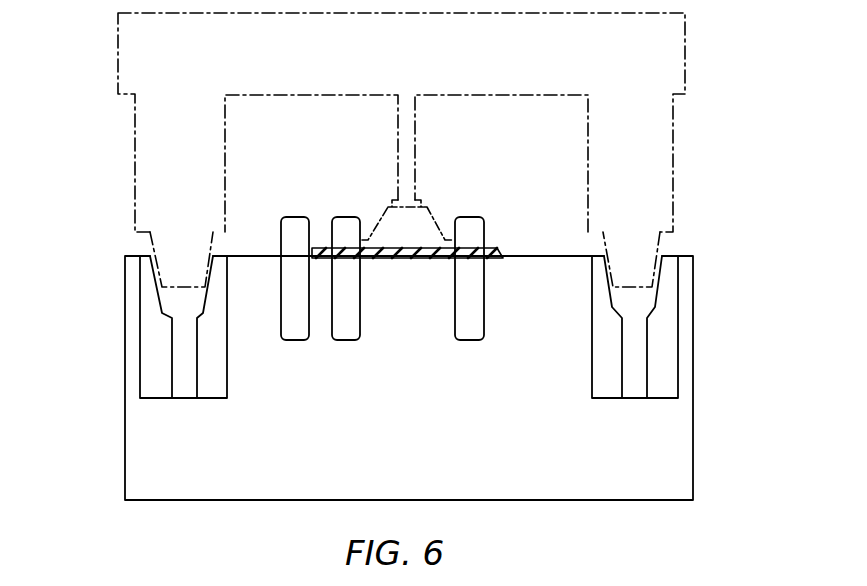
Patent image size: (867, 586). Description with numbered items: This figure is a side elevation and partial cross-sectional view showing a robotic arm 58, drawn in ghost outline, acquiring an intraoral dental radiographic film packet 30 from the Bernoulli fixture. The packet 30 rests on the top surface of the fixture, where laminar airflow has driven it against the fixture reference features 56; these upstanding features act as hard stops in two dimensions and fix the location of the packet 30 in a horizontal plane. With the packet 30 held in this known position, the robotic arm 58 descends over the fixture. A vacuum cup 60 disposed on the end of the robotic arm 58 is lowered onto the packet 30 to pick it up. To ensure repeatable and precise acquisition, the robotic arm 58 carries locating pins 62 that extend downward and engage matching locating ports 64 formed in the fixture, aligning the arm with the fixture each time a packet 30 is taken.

The robotic arm 58 is at (672, 56).
The locating pins 62 is at (172, 257).
The vacuum cup 60 is at (424, 206).
The locating ports 64 is at (170, 300).
The fixture reference features 56 is at (293, 216).
The intraoral dental radiographic film packet 30 is at (403, 259).